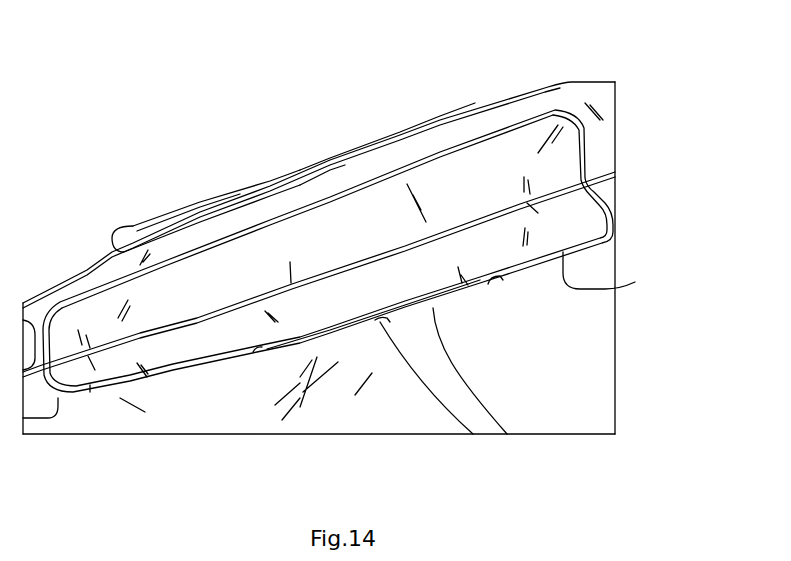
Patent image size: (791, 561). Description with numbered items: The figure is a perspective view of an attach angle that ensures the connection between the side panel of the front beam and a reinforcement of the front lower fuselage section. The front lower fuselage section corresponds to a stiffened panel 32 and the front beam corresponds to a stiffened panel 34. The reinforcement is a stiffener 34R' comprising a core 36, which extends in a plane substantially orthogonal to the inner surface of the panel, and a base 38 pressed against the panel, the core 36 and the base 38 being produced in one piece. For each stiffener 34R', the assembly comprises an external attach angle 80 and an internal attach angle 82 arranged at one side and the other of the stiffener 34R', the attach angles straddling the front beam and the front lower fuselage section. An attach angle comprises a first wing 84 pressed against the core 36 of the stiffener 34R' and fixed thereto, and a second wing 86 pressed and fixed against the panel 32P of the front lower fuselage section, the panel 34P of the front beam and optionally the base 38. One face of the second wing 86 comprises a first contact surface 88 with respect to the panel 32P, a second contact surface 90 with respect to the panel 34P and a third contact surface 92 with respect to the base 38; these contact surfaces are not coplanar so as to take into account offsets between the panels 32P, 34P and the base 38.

The stiffened panel 32 is at (394, 420).
The panel 32P is at (345, 411).
The stiffened panel 34 is at (612, 403).
The panel 34P is at (600, 366).
The stiffener 34R' is at (382, 109).
The core 36 is at (620, 103).
The base 38 is at (608, 200).
The external attach angle 80 is at (530, 157).
The internal attach angle 82 is at (136, 205).
The first wing 84 is at (277, 222).
The second wing 86 is at (185, 352).
The first contact surface 88 is at (270, 353).
The second contact surface 90 is at (507, 436).
The third contact surface 92 is at (635, 282).